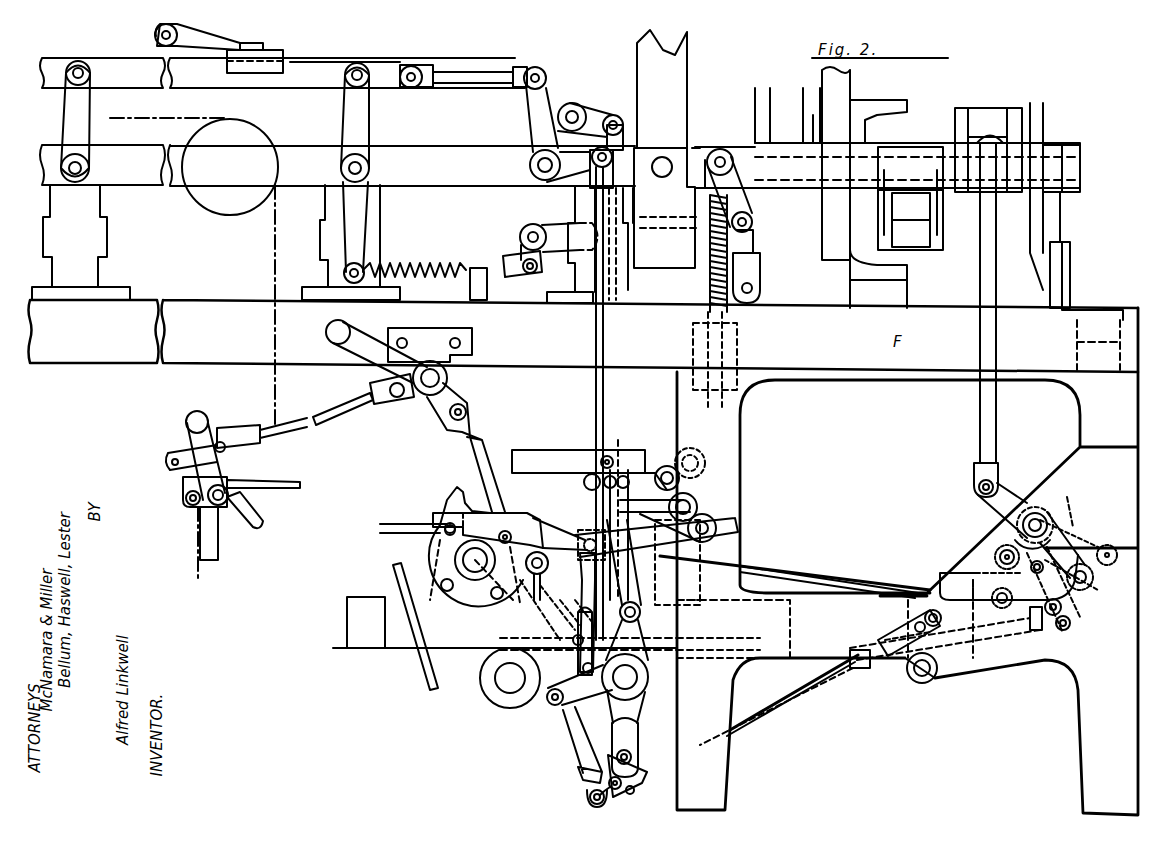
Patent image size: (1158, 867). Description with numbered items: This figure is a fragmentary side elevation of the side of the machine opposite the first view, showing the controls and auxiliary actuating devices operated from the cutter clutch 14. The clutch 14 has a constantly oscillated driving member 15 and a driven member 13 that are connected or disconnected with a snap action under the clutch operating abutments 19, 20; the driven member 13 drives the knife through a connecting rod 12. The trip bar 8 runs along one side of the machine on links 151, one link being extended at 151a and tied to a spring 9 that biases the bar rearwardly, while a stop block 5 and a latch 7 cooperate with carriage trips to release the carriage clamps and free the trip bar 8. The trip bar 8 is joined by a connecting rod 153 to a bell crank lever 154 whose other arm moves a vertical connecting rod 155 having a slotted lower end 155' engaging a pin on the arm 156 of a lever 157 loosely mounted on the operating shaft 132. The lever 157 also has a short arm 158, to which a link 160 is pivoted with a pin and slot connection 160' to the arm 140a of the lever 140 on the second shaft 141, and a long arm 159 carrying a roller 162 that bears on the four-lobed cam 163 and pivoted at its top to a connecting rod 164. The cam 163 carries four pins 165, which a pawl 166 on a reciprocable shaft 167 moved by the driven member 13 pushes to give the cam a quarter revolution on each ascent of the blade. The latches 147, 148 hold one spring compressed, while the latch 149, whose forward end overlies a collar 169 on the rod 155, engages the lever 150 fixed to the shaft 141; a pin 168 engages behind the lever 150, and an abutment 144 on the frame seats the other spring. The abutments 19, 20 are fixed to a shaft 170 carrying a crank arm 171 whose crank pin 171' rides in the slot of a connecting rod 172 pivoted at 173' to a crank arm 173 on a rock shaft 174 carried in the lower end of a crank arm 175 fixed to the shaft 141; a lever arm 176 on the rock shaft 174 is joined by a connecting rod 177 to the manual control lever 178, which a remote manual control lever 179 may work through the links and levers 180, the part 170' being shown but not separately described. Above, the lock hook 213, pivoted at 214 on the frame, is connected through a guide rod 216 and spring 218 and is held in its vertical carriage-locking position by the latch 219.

The stop block 5 is at (266, 60).
The latch 7 is at (228, 40).
The trip bar 8 is at (316, 78).
The spring 9 is at (438, 256).
The connecting rod 12 is at (995, 442).
The driven member 13 is at (1005, 492).
The cutter clutch 14 is at (1056, 550).
The driving member 15 is at (1053, 557).
The clutch operating abutment 19 is at (1073, 630).
The clutch operating abutment 20 is at (1035, 642).
The operating shaft 132 is at (505, 680).
The lever 140 is at (660, 614).
The arm of lever 140 140a is at (660, 695).
The second shaft 141 is at (648, 672).
The abutment 144 is at (583, 534).
The latch 147 is at (668, 515).
The latch 148 is at (566, 448).
The latch 149 is at (656, 537).
The lever 150 is at (672, 562).
The links 151 is at (80, 126).
The link extension 151a is at (374, 238).
The connecting rod 153 is at (446, 74).
The bell crank lever 154 is at (546, 92).
The vertical connecting rod 155 is at (579, 403).
The slotted lower end 155' is at (718, 638).
The arm 156 is at (553, 706).
The lever 157 is at (495, 700).
The short arm 158 is at (520, 708).
The long arm 159 is at (580, 594).
The link 160 is at (575, 559).
The pin and slot connection 160' is at (576, 612).
The roller 162 is at (558, 520).
The four-lobed cam 163 is at (440, 497).
The connecting rod 164 is at (395, 525).
The pins 165 is at (449, 590).
The pawl 166 is at (498, 510).
The reciprocable shaft 167 is at (851, 572).
The pin 168 is at (640, 605).
The collar 169 is at (549, 570).
The shaft 170 is at (920, 678).
The rod 170' is at (877, 635).
The crank arm 171 is at (907, 646).
The crank pin 171' is at (898, 614).
The connecting rod 172 is at (777, 705).
The crank arm 173 is at (576, 786).
The pivot connection 173' is at (652, 801).
The rock shaft 174 is at (643, 772).
The crank arm 175 is at (641, 734).
The lever arm 176 is at (585, 795).
The connecting rod 177 is at (577, 763).
The manual control lever 178 is at (438, 415).
The additional manual control lever 179 is at (214, 428).
The system of links and levers 180 is at (280, 436).
The lock hook 213 is at (689, 100).
The pivot 214 is at (662, 156).
The guide rod 216 is at (706, 272).
The spring 218 is at (762, 275).
The latch 219 is at (756, 211).